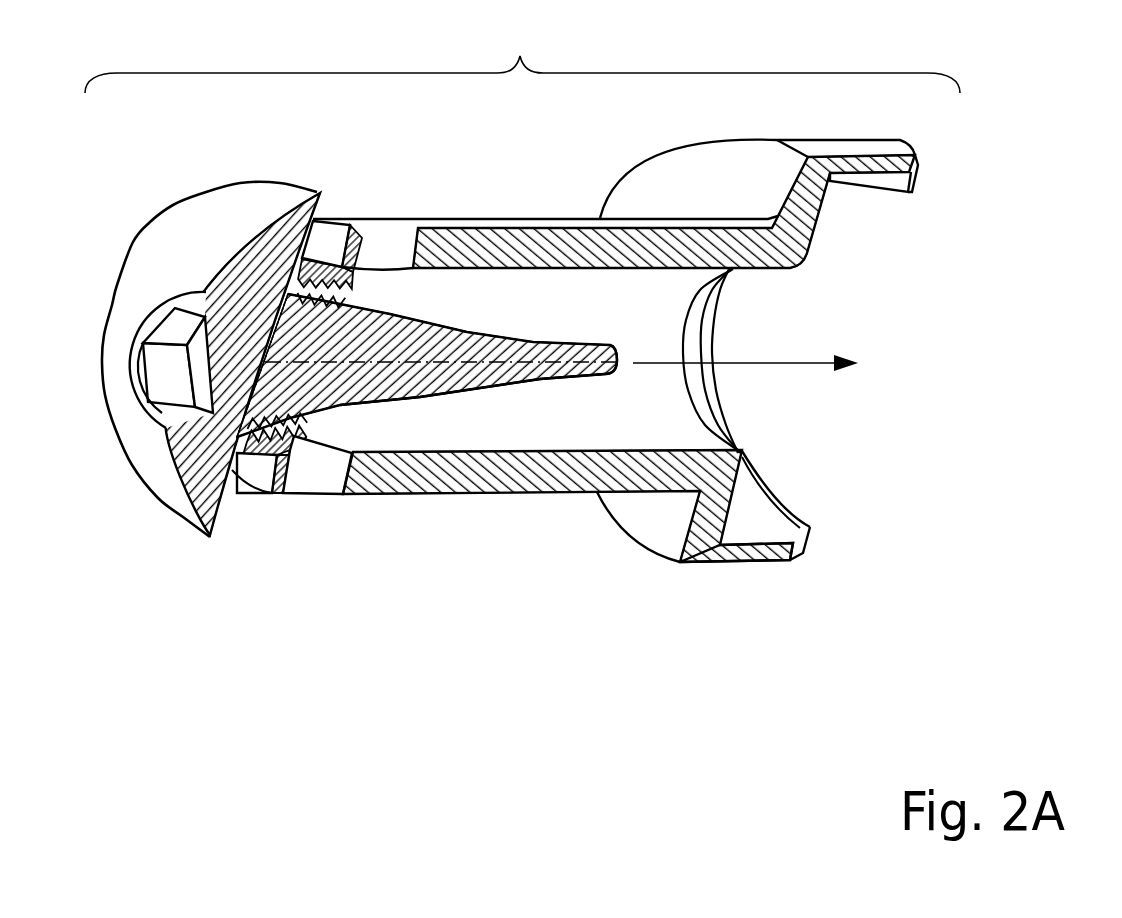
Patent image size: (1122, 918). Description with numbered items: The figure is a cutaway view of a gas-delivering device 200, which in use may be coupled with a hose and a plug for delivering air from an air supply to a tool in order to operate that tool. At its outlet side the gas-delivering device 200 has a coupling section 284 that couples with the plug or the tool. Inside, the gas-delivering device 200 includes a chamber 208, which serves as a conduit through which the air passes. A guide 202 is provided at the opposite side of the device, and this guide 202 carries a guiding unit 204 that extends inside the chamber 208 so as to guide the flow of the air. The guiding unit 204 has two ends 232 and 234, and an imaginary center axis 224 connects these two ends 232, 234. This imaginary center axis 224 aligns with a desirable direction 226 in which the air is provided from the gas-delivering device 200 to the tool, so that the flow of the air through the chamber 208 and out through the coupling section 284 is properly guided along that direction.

The gas-delivering device 200 is at (522, 55).
The guide 202 is at (110, 468).
The guiding unit 204 is at (465, 342).
The chamber 208 is at (473, 487).
The imaginary center axis 224 is at (557, 378).
The desirable direction 226 is at (783, 367).
The end of guiding unit 232 is at (613, 377).
The end of guiding unit 234 is at (276, 335).
The coupling section 284 is at (737, 552).